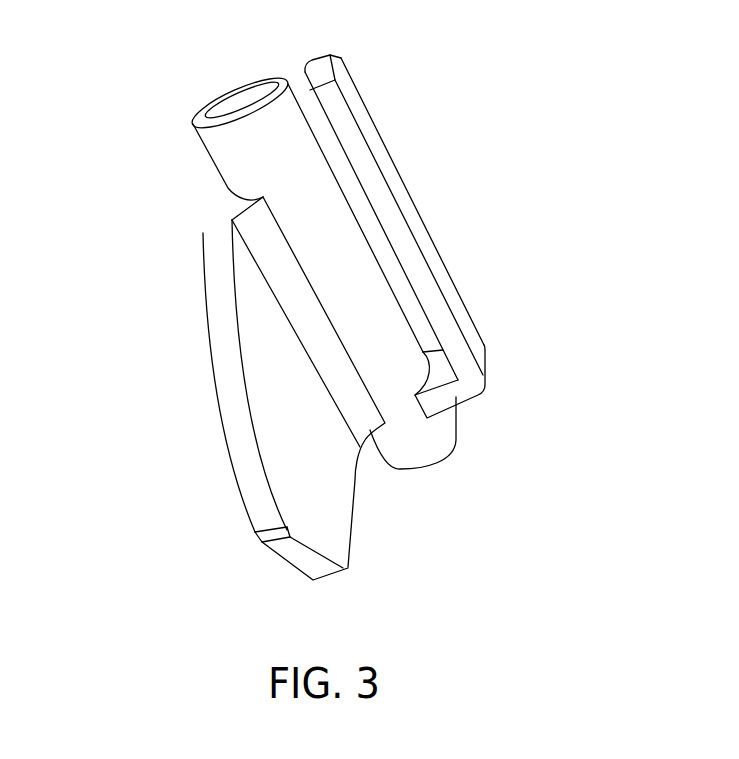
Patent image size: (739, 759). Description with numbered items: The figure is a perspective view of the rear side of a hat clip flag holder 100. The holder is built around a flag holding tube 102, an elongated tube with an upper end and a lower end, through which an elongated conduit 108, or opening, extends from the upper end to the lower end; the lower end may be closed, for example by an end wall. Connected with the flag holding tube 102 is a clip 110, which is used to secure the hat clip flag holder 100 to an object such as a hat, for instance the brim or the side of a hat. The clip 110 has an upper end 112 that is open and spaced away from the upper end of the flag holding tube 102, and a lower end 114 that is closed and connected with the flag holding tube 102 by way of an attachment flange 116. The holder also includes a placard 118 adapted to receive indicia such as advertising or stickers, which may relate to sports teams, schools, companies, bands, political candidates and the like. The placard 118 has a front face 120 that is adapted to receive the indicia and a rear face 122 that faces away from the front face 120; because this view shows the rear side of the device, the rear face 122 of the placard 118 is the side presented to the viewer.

The hat clip flag holder 100 is at (147, 115).
The flag holding tube 102 is at (232, 155).
The elongated conduit 108 is at (229, 95).
The clip 110 is at (412, 253).
The upper end 112 is at (378, 38).
The lower end 114 is at (510, 323).
The attachment flange 116 is at (467, 405).
The placard 118 is at (220, 316).
The front face 120 is at (215, 488).
The rear face 122 is at (333, 493).